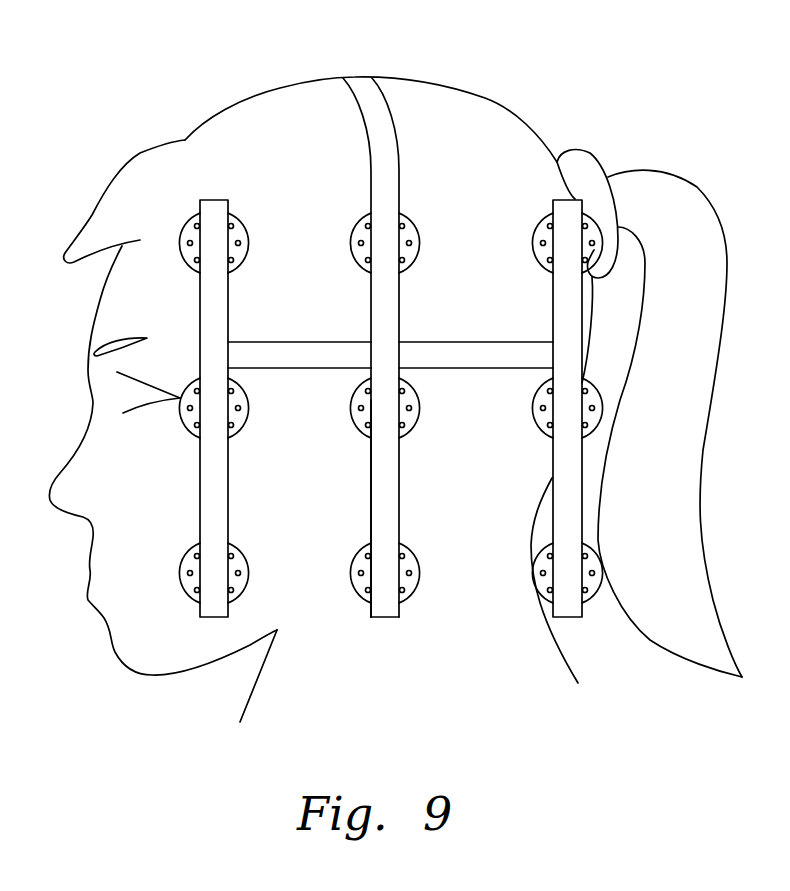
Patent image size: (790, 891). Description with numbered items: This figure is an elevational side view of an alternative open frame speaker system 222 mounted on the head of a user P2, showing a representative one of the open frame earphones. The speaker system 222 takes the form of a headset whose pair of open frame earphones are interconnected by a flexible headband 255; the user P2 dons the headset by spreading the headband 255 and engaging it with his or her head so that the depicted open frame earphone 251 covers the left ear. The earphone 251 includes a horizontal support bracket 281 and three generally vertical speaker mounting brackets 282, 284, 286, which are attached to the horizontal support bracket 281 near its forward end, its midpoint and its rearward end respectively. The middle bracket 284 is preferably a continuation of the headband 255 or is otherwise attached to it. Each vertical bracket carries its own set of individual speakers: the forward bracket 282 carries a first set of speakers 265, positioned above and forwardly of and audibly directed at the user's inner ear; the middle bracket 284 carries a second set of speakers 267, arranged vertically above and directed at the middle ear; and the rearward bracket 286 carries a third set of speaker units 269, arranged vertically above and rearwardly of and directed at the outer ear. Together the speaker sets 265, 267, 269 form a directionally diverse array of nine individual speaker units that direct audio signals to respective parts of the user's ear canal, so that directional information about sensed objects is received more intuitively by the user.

The user P2 is at (118, 170).
The open frame speaker system 222 is at (397, 382).
The open frame earphone 251 is at (490, 153).
The flexible headband 255 is at (380, 103).
The first set of speakers 265 is at (185, 578).
The second set of speakers 267 is at (352, 588).
The third set of speaker units 269 is at (540, 239).
The horizontal support bracket 281 is at (472, 370).
The forward speaker mounting bracket 282 is at (230, 478).
The middle speaker mounting bracket 284 is at (400, 512).
The rearward speaker mounting bracket 286 is at (570, 617).